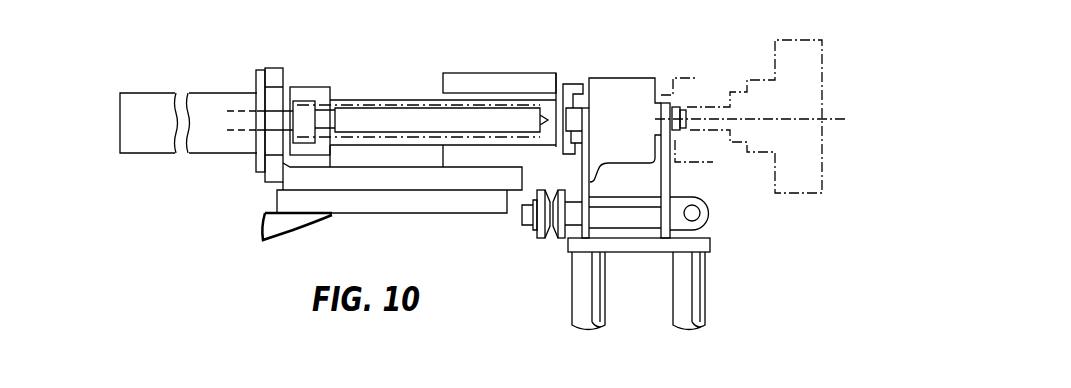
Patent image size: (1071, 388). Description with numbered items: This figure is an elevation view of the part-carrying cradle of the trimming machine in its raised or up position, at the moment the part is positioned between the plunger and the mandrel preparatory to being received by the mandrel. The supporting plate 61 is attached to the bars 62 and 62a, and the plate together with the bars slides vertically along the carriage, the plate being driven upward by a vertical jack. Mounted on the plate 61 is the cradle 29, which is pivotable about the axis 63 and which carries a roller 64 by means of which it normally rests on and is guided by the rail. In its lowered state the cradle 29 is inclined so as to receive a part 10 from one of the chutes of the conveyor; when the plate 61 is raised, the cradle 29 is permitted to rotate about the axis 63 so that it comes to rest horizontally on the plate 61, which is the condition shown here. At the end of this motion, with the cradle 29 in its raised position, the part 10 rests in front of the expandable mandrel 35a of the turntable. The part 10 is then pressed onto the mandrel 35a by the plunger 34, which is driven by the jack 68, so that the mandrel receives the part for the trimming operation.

The jack 68 is at (203, 97).
The plunger 34 is at (460, 127).
The part 10 is at (607, 78).
The expandable mandrel 35a is at (700, 108).
The cradle 29 is at (642, 203).
The axis 63 is at (694, 209).
The supporting plate 61 is at (712, 243).
The bar 62 is at (572, 293).
The bar 62a is at (705, 300).
The roller 64 is at (538, 237).